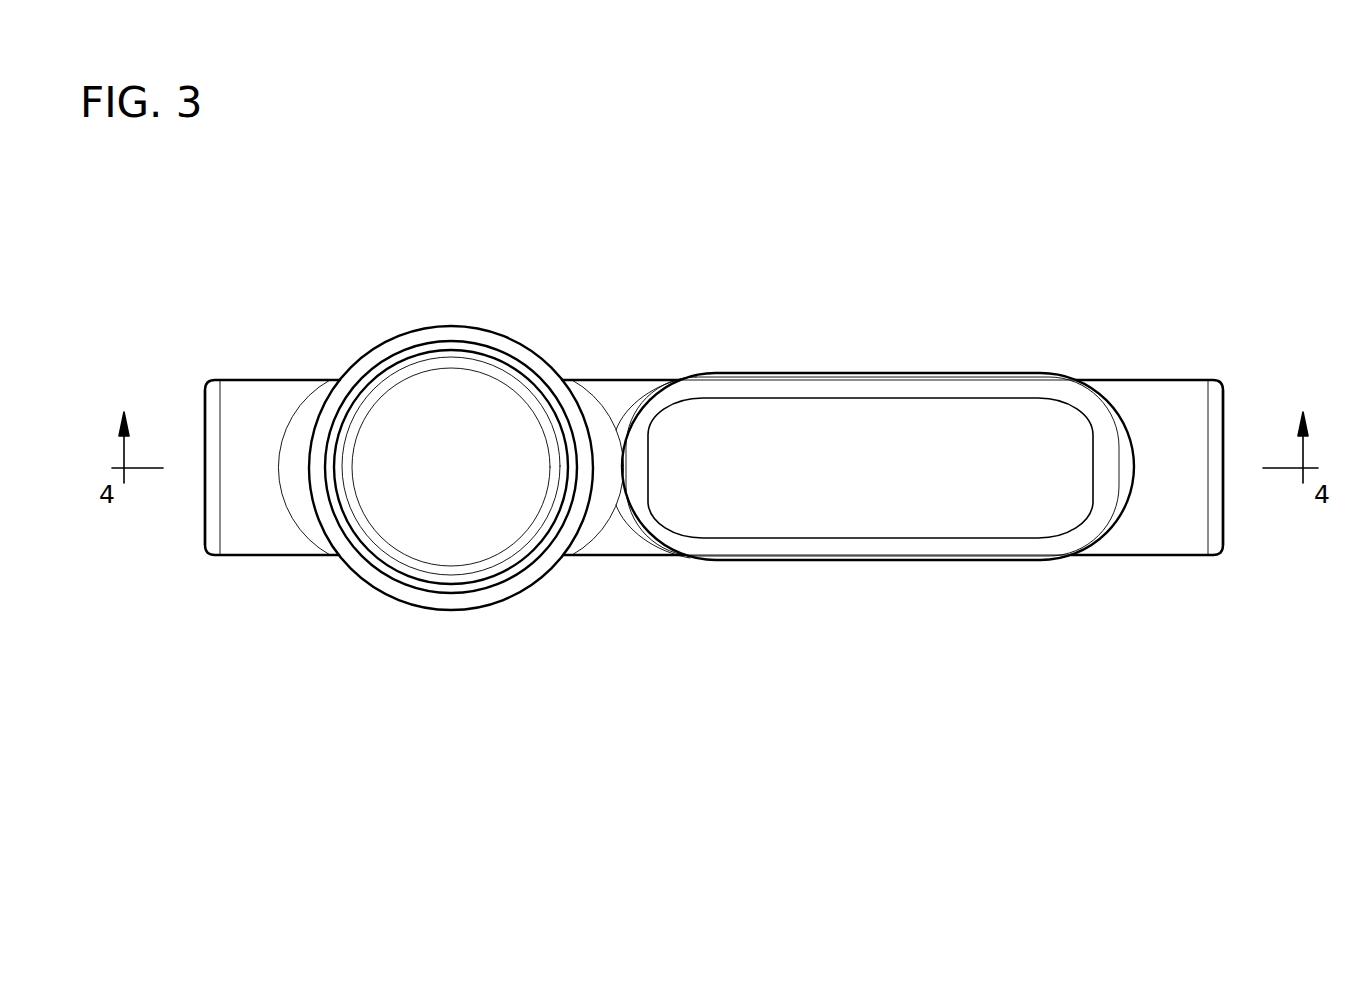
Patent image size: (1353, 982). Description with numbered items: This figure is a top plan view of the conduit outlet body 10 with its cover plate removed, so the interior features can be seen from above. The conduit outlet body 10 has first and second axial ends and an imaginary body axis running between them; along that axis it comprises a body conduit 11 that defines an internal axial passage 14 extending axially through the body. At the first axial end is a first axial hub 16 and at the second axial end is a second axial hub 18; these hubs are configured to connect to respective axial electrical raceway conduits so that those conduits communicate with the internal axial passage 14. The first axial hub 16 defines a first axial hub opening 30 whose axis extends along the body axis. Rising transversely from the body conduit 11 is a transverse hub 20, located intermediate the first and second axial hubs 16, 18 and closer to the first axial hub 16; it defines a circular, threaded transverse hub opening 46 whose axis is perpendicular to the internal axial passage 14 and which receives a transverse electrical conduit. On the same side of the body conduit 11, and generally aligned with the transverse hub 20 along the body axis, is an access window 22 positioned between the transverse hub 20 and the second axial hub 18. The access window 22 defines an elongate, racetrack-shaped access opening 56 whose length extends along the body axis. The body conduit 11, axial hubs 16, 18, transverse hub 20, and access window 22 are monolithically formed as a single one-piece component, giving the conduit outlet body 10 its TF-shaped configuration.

The conduit outlet body 10 is at (713, 412).
The body conduit 11 is at (617, 543).
The internal axial passage 14 is at (860, 473).
The first axial hub 16 is at (203, 543).
The second axial hub 18 is at (1222, 541).
The transverse hub 20 is at (492, 353).
The access window 22 is at (763, 388).
The first axial hub opening 30 is at (417, 377).
The transverse hub opening 46 is at (466, 483).
The access opening 56 is at (896, 398).